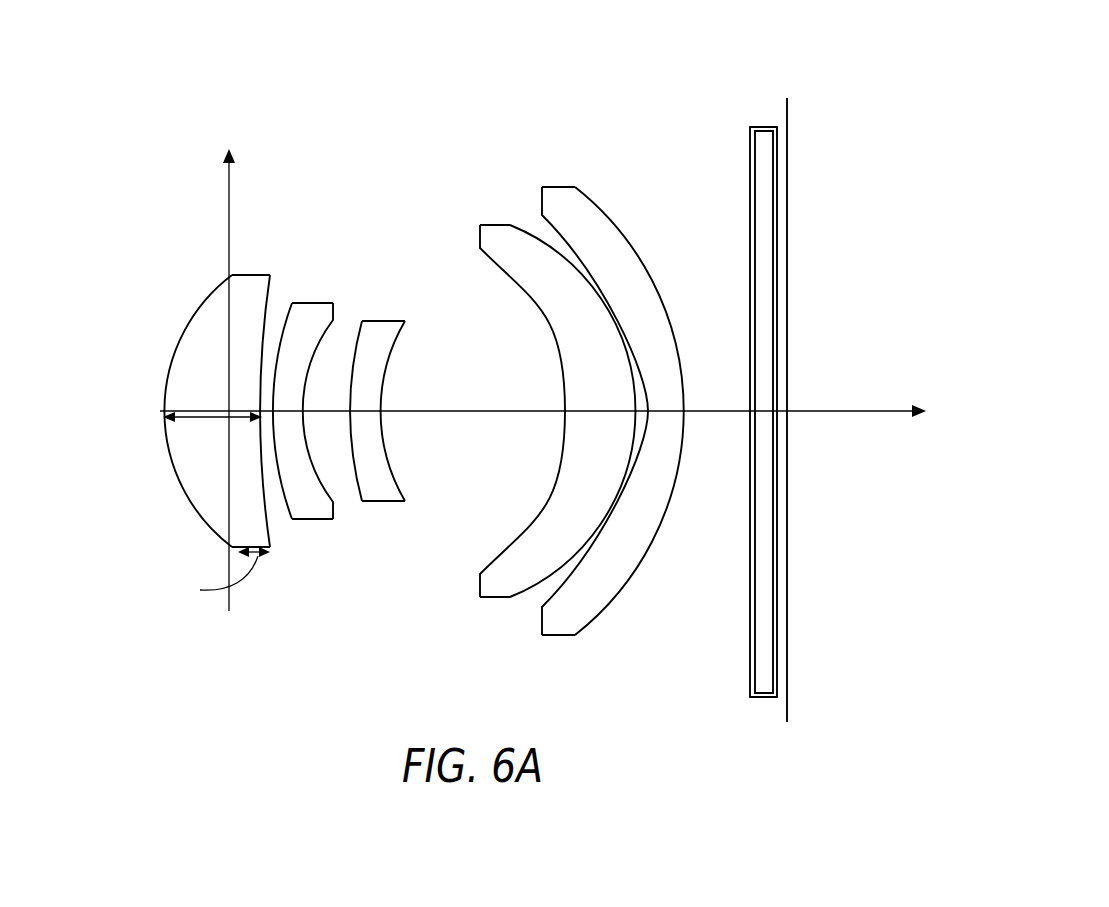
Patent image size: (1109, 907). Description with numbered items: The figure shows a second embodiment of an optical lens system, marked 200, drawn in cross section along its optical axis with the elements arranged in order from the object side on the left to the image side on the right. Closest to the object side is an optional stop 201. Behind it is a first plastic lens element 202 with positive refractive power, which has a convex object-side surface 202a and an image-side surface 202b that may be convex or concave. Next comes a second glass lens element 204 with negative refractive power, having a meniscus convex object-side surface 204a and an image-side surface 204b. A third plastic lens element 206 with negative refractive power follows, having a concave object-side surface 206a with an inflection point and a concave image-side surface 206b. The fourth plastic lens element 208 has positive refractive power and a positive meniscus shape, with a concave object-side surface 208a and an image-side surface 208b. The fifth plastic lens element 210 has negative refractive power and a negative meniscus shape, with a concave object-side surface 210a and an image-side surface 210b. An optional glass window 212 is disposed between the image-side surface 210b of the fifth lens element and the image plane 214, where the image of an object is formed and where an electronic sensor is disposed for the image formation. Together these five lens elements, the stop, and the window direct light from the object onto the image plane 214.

The optical lens system embodiment 200 is at (871, 74).
The stop 201 is at (229, 223).
The first plastic lens element 202 is at (207, 391).
The object-side surface of first lens element 202a is at (170, 467).
The image-side surface of first lens element 202b is at (268, 500).
The second glass lens element 204 is at (352, 389).
The object-side surface of second lens element 204a is at (281, 490).
The image-side surface of second lens element 204b is at (313, 468).
The third plastic lens element 206 is at (408, 358).
The object-side surface of third lens element 206a is at (341, 377).
The image-side surface of third lens element 206b is at (383, 440).
The fourth plastic lens element 208 is at (533, 356).
The object-side surface of fourth lens element 208a is at (527, 292).
The image-side surface of fourth lens element 208b is at (598, 532).
The fifth plastic lens element 210 is at (635, 360).
The object-side surface of fifth lens element 210a is at (598, 287).
The image-side surface of fifth lens element 210b is at (653, 538).
The glass window 212 is at (750, 163).
The image plane 214 is at (787, 178).